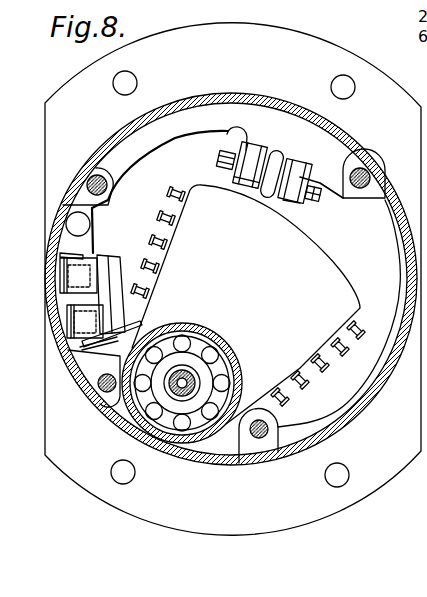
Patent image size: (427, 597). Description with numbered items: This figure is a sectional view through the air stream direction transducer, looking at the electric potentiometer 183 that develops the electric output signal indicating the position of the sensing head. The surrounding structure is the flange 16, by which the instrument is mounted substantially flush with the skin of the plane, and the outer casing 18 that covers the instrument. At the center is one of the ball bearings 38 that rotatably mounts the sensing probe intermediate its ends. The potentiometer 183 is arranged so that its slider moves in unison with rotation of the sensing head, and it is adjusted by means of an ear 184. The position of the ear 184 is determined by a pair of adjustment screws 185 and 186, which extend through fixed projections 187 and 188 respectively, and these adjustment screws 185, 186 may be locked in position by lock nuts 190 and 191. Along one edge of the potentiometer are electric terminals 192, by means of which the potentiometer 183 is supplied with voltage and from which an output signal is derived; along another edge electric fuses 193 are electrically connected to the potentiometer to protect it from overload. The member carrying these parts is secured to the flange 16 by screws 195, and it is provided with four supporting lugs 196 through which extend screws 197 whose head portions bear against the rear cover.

The flange 16 is at (200, 536).
The outer casing 18 is at (268, 97).
The ball bearing 38 is at (180, 426).
The electric potentiometer 183 is at (322, 279).
The ear 184 is at (271, 178).
The adjustment screw 185 is at (268, 147).
The adjustment screw 186 is at (286, 165).
The fixed projection 187 is at (238, 170).
The fixed projection 188 is at (293, 200).
The lock nut 190 is at (234, 133).
The lock nut 191 is at (313, 194).
The electric terminals 192 is at (158, 225).
The electric fuses 193 is at (100, 320).
The screws 195 is at (90, 228).
The supporting lugs 196 is at (230, 305).
The screws 197 is at (230, 291).